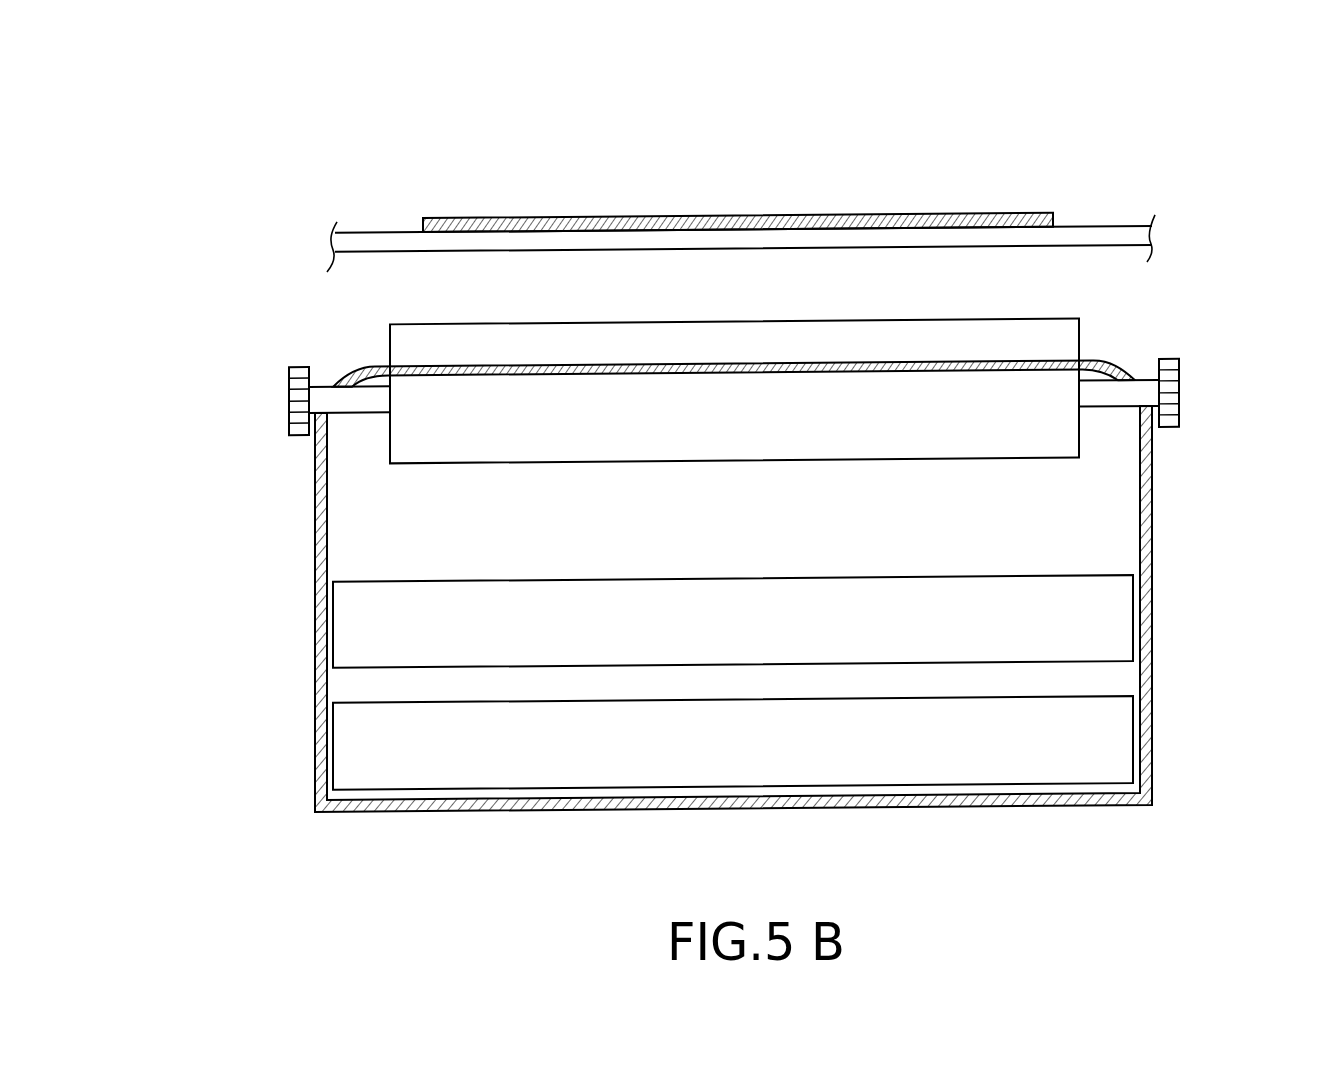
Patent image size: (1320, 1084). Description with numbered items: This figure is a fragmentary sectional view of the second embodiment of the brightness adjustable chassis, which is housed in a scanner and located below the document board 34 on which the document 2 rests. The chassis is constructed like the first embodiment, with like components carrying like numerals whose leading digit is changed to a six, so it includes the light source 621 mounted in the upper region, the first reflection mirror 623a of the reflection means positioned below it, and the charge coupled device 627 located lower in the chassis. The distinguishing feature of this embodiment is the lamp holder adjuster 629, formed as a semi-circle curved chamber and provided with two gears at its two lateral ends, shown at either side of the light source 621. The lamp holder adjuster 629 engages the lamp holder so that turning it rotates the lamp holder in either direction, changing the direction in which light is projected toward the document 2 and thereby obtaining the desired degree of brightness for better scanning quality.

The document 2 is at (888, 185).
The document board 34 is at (1084, 235).
The light source 621 is at (1068, 328).
The lamp holder adjuster 629 is at (297, 368).
The first reflection mirror 623a is at (613, 593).
The charge coupled device (CCD) 627 is at (342, 750).